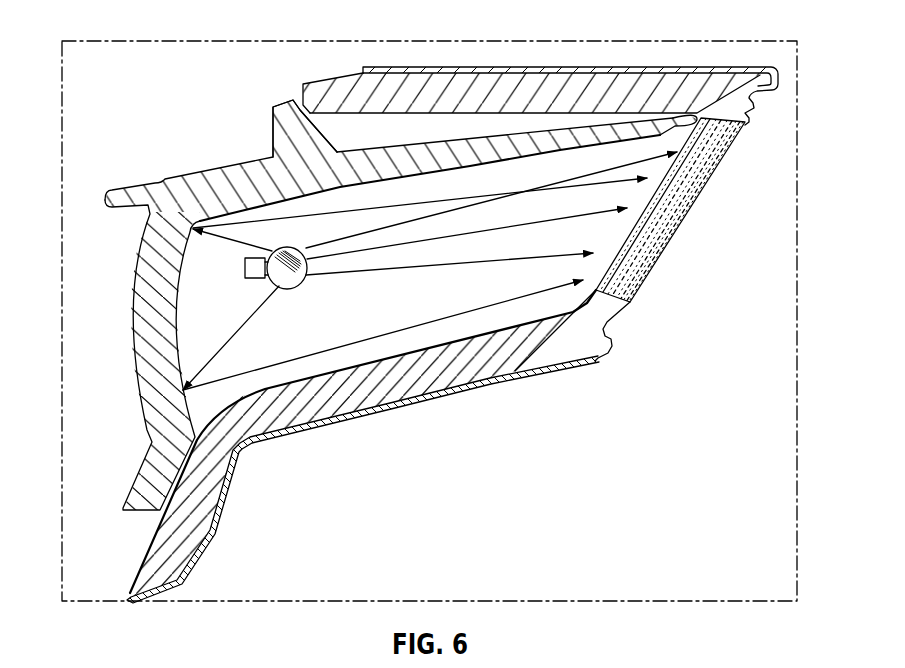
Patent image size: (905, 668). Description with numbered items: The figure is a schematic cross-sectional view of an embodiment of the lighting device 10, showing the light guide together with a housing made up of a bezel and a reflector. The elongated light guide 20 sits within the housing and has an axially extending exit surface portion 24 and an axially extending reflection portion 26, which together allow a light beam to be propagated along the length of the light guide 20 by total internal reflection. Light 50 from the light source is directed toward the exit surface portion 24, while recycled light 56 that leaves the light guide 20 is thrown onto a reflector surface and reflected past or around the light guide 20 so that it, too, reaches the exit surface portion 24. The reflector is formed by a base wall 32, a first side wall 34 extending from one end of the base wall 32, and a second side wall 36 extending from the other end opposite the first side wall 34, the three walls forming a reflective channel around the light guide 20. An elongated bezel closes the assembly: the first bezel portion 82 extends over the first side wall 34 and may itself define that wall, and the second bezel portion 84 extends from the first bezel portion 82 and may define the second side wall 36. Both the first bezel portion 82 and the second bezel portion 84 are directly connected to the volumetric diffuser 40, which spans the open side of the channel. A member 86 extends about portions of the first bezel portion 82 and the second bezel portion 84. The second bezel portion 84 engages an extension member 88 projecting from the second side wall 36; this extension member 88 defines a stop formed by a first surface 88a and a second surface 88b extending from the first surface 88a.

The lighting device 10 is at (774, 31).
The elongated light guide 20 is at (252, 230).
The exit surface portion 24 is at (288, 287).
The reflection portion 26 is at (245, 271).
The base wall 32 is at (131, 291).
The first side wall 34 is at (380, 443).
The second side wall 36 is at (457, 135).
The volumetric diffuser 40 is at (655, 284).
The light 50 is at (383, 270).
The recycled light 56 is at (222, 216).
The first bezel portion 82 is at (424, 348).
The second bezel portion 84 is at (502, 116).
The member 86 is at (675, 65).
The extension member 88 is at (280, 120).
The first surface 88a is at (331, 150).
The second surface 88b is at (303, 105).